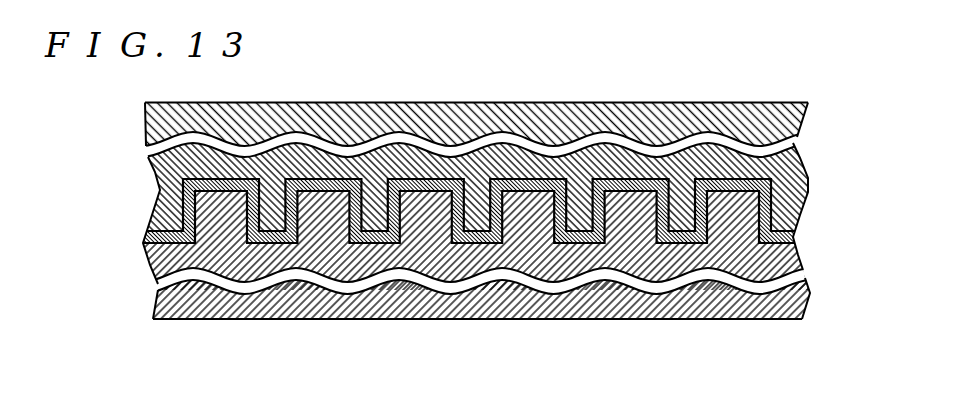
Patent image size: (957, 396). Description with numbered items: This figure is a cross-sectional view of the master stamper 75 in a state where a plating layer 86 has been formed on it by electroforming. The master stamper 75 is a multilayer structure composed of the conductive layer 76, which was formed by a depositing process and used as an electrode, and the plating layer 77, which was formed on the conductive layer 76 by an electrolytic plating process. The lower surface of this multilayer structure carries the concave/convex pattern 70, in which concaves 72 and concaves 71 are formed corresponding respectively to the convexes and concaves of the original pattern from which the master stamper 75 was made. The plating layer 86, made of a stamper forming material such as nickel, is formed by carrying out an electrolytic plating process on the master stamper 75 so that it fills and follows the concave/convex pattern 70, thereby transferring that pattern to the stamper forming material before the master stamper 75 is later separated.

The concave/convex pattern 70 is at (388, 244).
The concaves 71 is at (576, 225).
The concaves 72 is at (528, 214).
The master stamper 75 is at (133, 102).
The conductive layer 76 is at (793, 237).
The plating layer 77 is at (808, 188).
The plating layer 86 is at (802, 300).